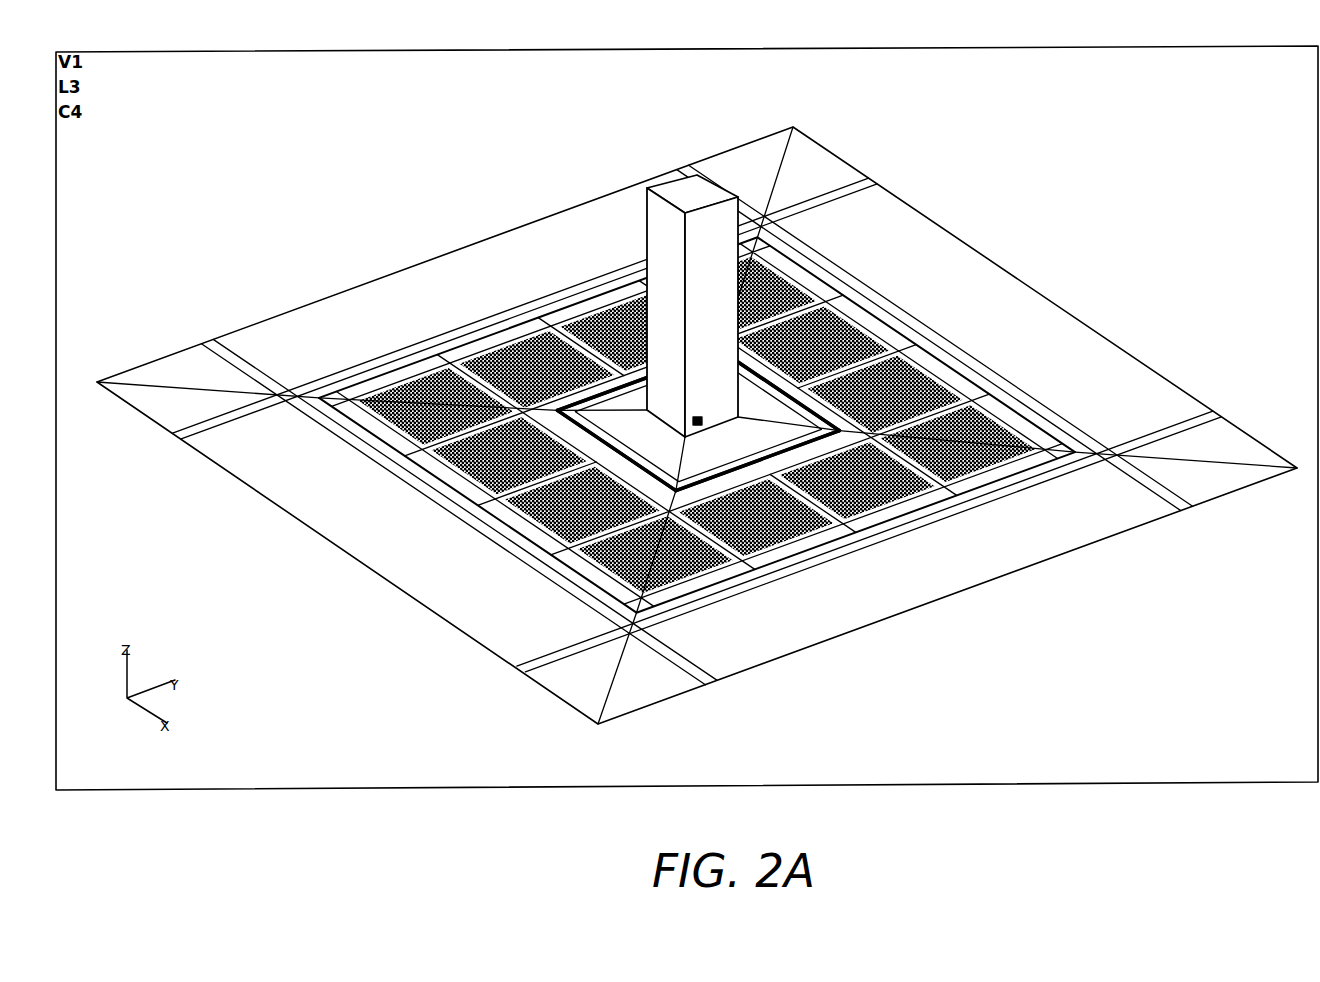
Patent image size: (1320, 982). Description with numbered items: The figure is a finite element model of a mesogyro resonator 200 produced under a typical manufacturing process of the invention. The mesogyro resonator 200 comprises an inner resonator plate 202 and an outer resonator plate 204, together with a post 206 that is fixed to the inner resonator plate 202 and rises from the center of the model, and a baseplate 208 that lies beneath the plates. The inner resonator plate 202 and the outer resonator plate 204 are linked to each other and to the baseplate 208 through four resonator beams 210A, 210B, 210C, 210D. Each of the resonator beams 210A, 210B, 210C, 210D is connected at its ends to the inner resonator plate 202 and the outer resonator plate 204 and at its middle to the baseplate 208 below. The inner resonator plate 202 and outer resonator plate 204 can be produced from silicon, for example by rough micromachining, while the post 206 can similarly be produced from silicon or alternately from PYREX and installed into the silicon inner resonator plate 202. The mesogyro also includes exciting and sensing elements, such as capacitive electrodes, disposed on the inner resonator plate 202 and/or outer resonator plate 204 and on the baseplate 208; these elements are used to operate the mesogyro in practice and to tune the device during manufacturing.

The mesogyro resonator 200 is at (1178, 172).
The inner resonator plate 202 is at (745, 395).
The outer resonator plate 204 is at (968, 420).
The post 206 is at (707, 178).
The baseplate 208 is at (1132, 388).
The resonator beam 210A is at (808, 412).
The resonator beam 210B is at (773, 440).
The resonator beam 210C is at (556, 412).
The resonator beam 210D is at (578, 362).